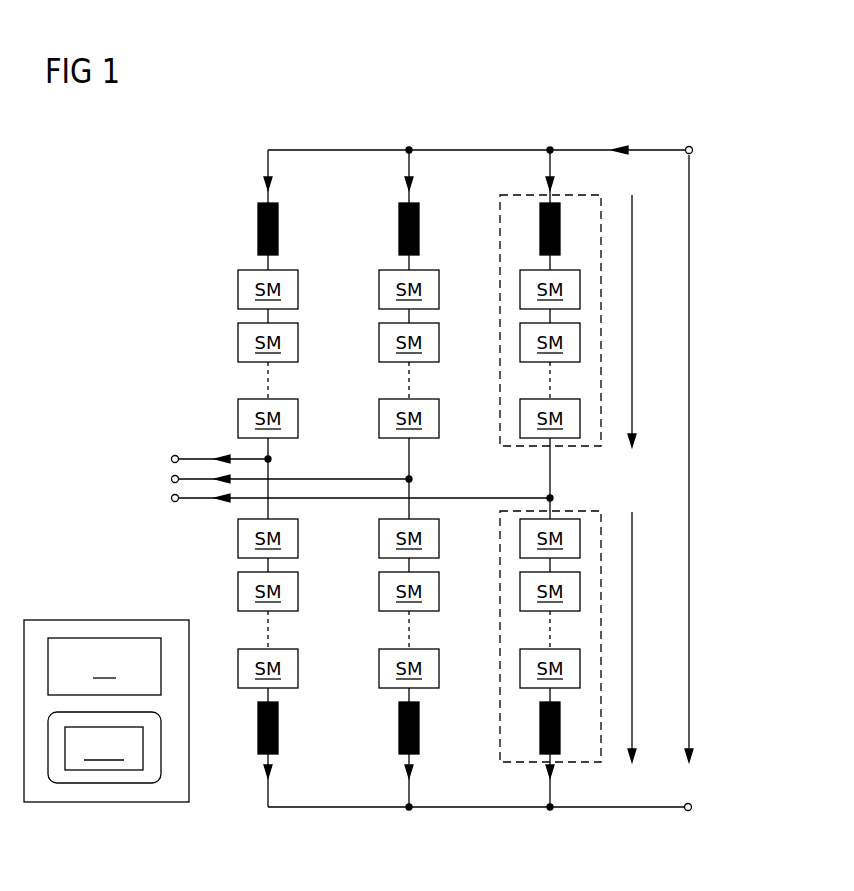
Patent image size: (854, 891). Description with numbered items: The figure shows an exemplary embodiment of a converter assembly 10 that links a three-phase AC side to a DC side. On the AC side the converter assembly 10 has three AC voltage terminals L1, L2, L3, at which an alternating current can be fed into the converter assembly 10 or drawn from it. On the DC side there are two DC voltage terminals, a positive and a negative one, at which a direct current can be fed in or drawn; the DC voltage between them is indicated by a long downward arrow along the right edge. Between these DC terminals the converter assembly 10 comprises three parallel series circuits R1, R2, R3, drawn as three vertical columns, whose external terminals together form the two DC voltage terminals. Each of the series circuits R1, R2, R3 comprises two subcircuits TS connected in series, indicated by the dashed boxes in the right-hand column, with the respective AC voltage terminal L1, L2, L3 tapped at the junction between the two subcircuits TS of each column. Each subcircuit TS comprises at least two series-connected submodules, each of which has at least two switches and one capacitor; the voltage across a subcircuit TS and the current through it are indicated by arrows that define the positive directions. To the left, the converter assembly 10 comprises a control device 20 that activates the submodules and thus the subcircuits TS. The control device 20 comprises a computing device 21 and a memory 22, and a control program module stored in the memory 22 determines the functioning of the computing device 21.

The converter assembly 10 is at (436, 434).
The control device 20 is at (106, 713).
The computing device 21 is at (104, 666).
The memory 22 is at (105, 802).
The series circuit R1 is at (266, 172).
The series circuit R2 is at (407, 172).
The series circuit R3 is at (547, 172).
The subcircuit TS is at (499, 232).
The AC voltage terminal L1 is at (218, 444).
The AC voltage terminal L2 is at (275, 480).
The AC voltage terminal L3 is at (359, 514).